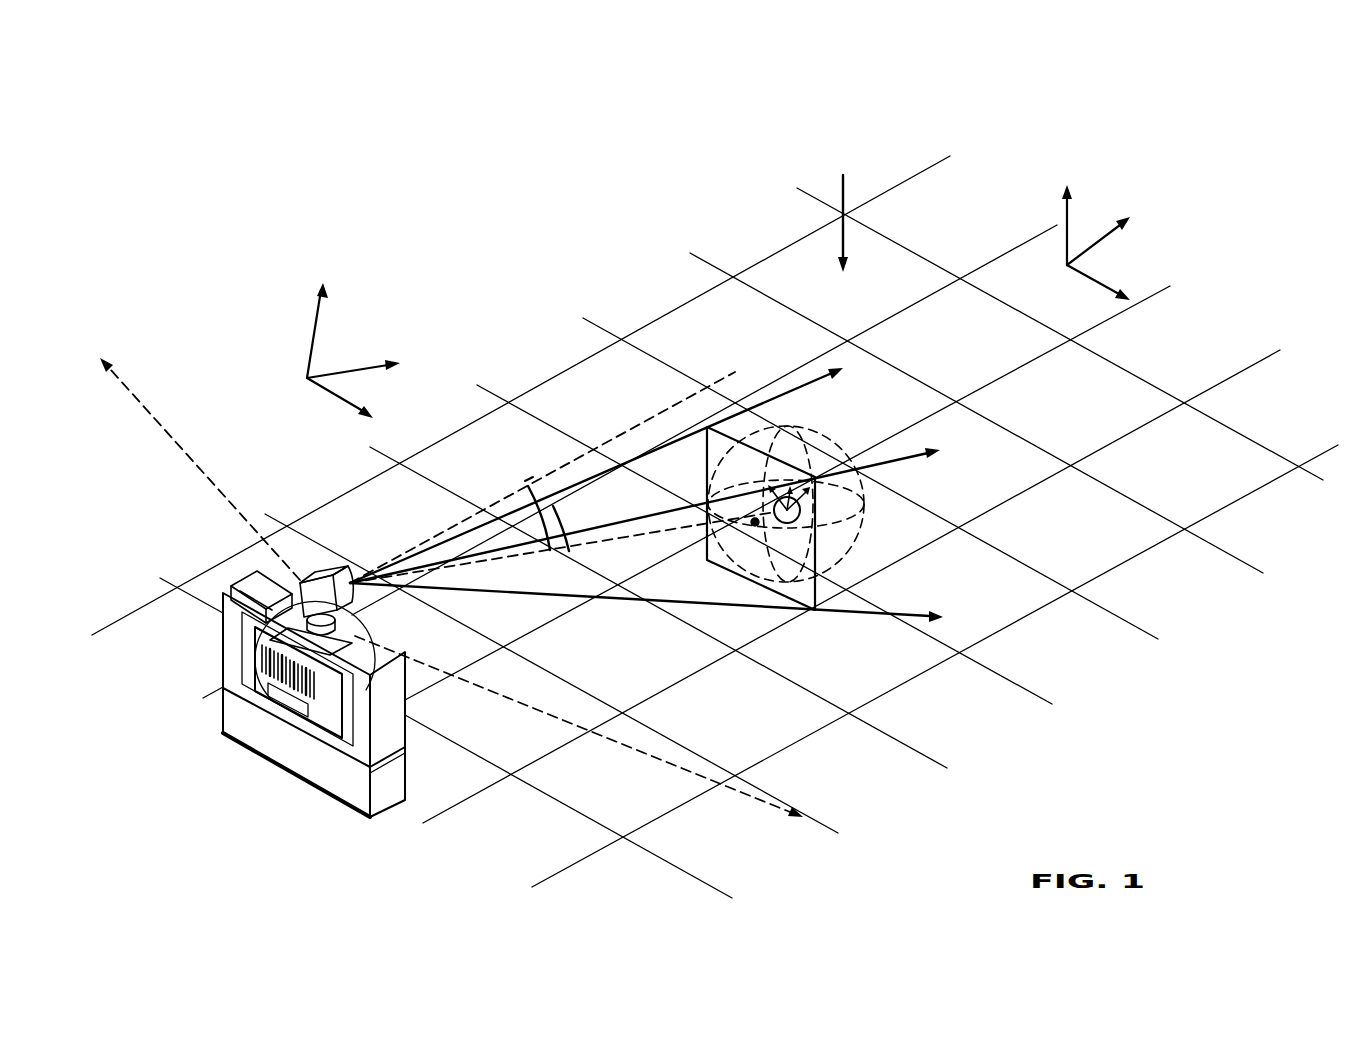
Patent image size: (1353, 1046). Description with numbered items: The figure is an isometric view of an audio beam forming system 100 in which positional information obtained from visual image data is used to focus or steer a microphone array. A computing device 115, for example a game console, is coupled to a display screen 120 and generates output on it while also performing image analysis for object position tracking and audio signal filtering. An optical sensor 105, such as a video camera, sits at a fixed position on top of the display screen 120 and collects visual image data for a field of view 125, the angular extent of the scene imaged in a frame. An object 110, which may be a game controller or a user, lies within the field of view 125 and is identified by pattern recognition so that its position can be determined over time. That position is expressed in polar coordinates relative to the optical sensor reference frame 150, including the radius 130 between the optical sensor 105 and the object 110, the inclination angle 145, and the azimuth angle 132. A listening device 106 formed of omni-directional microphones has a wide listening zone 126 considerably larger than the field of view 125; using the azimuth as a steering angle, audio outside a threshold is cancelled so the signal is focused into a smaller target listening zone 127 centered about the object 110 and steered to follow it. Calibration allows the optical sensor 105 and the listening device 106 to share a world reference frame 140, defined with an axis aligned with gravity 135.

The audio beam forming system 100 is at (600, 212).
The optical sensor 105 is at (310, 570).
The listening device 106 is at (366, 690).
The object 110 is at (800, 503).
The computing device 115 is at (240, 578).
The display screen 120 is at (232, 642).
The field of view 125 is at (747, 580).
The listening zone 126 is at (520, 700).
The target listening zone 127 is at (827, 440).
The radius r 130 is at (633, 537).
The azimuth angle φ 132 is at (603, 542).
The gravity 135 is at (845, 188).
The world reference frame 140 is at (1078, 264).
The inclination theta 145 is at (543, 480).
The optical sensor reference frame 150 is at (954, 782).